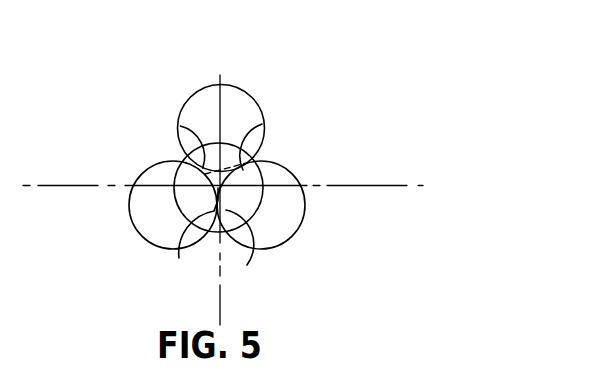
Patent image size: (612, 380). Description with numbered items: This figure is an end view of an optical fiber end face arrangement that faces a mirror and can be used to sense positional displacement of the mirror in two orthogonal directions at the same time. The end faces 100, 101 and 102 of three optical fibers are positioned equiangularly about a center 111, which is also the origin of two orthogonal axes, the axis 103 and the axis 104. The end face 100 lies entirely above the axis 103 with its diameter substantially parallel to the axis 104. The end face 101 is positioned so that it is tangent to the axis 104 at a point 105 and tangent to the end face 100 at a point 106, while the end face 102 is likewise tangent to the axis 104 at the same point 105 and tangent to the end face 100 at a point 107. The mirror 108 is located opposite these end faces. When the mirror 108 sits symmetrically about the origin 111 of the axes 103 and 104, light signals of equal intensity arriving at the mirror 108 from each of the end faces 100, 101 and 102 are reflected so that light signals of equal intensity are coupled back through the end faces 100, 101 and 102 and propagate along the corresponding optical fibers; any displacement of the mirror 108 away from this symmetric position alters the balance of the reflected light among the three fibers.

The end face 100 is at (250, 94).
The end face 101 is at (142, 236).
The end face 102 is at (300, 236).
The axis 103 is at (380, 185).
The axis 104 is at (219, 70).
The point 105 is at (185, 240).
The point 106 is at (180, 126).
The point 107 is at (262, 124).
The mirror 108 is at (253, 252).
The center 111 is at (213, 178).